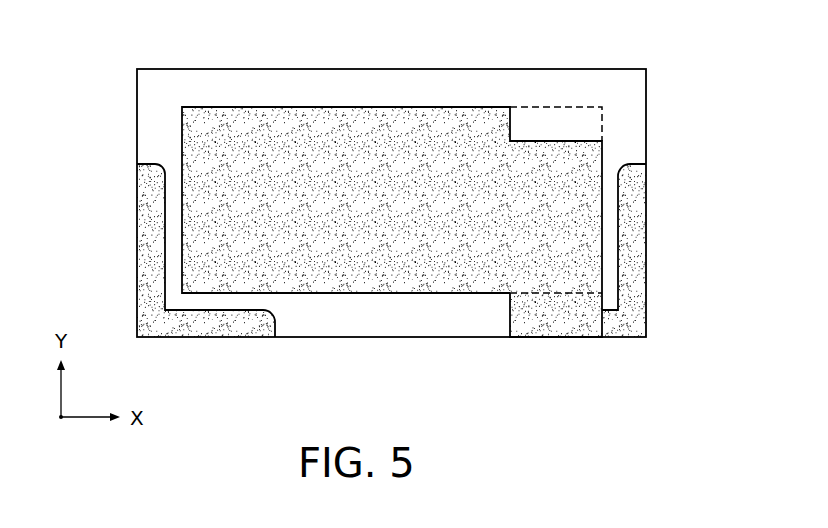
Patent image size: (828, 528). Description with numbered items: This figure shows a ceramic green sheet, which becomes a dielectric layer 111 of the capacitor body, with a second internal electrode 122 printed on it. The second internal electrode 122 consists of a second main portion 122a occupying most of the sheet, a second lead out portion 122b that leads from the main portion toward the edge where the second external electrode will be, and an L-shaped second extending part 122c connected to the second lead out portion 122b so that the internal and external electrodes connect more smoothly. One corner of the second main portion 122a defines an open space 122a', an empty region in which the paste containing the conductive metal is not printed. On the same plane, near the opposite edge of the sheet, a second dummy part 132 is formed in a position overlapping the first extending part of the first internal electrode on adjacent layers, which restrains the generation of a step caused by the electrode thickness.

The dielectric layer 111 is at (628, 69).
The second internal electrode 122 is at (425, 203).
The second main portion 122a is at (392, 248).
The open space 122a' is at (560, 85).
The second lead out portion 122b is at (545, 317).
The second extending part 122c is at (632, 330).
The second dummy part 132 is at (198, 328).